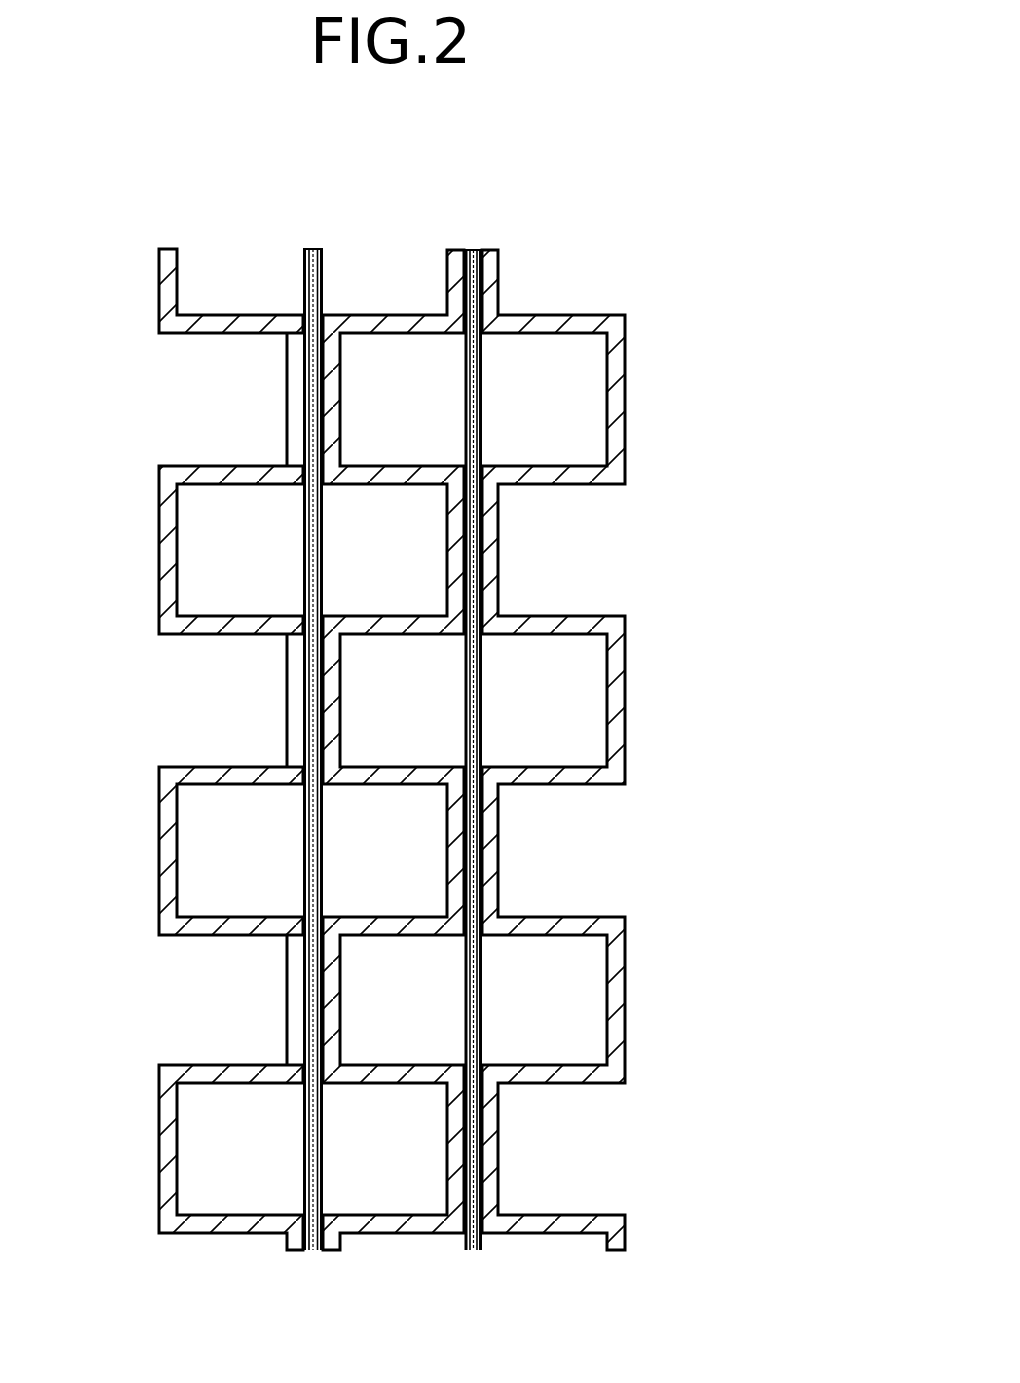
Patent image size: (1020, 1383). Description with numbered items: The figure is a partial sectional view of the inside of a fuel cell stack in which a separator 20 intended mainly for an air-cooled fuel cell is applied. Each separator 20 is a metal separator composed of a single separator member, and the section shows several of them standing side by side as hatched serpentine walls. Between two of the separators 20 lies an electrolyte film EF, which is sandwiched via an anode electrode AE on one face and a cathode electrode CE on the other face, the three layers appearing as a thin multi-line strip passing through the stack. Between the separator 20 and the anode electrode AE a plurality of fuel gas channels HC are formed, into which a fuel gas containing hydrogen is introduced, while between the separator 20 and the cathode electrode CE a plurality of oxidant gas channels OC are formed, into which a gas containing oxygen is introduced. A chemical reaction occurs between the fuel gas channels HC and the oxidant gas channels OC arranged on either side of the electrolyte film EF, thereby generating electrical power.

The separator 20 is at (178, 267).
The electrolyte film EF is at (403, 763).
The oxidant gas channel OC is at (198, 600).
The fuel gas channel HC is at (426, 602).
The cathode electrode CE is at (303, 1250).
The anode electrode AE is at (322, 1250).